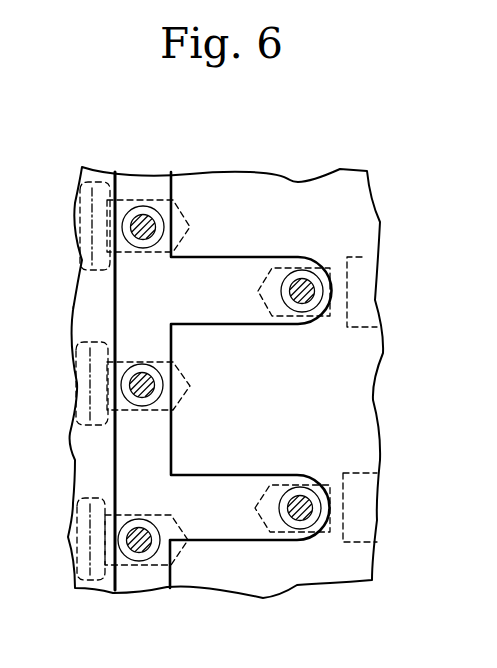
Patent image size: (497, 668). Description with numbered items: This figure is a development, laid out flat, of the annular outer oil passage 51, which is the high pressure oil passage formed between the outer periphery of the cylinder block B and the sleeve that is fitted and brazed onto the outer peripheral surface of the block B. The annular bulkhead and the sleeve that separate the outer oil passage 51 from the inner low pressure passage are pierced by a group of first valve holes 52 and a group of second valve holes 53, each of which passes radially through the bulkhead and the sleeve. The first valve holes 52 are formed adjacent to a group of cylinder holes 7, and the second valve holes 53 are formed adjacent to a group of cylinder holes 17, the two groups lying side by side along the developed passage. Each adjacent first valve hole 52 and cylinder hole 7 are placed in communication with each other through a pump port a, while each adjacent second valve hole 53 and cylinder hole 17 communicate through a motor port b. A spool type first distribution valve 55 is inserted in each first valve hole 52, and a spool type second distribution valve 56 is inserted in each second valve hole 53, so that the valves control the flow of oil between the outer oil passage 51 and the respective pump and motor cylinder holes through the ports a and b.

The cylinder block B is at (262, 187).
The cylinder hole 7 is at (377, 262).
The cylinder hole 17 is at (82, 206).
The outer oil passage 51 is at (117, 182).
The first valve hole 52 is at (289, 311).
The second valve hole 53 is at (140, 244).
The first distribution valve 55 is at (310, 283).
The second distribution valve 56 is at (135, 233).
The pump port a is at (332, 308).
The motor port b is at (165, 252).